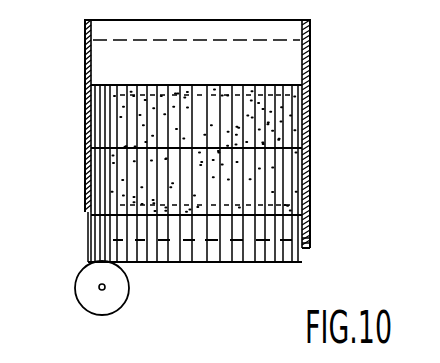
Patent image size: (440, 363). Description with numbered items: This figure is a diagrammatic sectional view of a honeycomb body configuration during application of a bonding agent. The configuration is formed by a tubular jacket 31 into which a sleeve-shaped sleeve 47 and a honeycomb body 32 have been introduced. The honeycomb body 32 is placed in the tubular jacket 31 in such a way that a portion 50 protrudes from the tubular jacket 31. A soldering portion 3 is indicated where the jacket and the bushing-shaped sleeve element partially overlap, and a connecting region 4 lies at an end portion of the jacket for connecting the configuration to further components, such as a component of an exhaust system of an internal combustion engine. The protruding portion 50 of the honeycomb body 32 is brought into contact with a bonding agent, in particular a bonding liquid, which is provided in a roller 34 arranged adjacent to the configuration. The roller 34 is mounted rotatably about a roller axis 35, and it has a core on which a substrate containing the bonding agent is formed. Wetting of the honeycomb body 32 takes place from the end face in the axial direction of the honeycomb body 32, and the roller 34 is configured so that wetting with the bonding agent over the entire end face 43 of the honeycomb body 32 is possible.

The tubular jacket 31 is at (85, 62).
The honeycomb body 32 is at (108, 118).
The soldering portion 3 is at (102, 163).
The sleeve 47 is at (92, 191).
The connecting region 4 is at (124, 232).
The end face 43 is at (222, 263).
The portion 50 is at (306, 248).
The roller 34 is at (89, 298).
The roller axis 35 is at (105, 290).